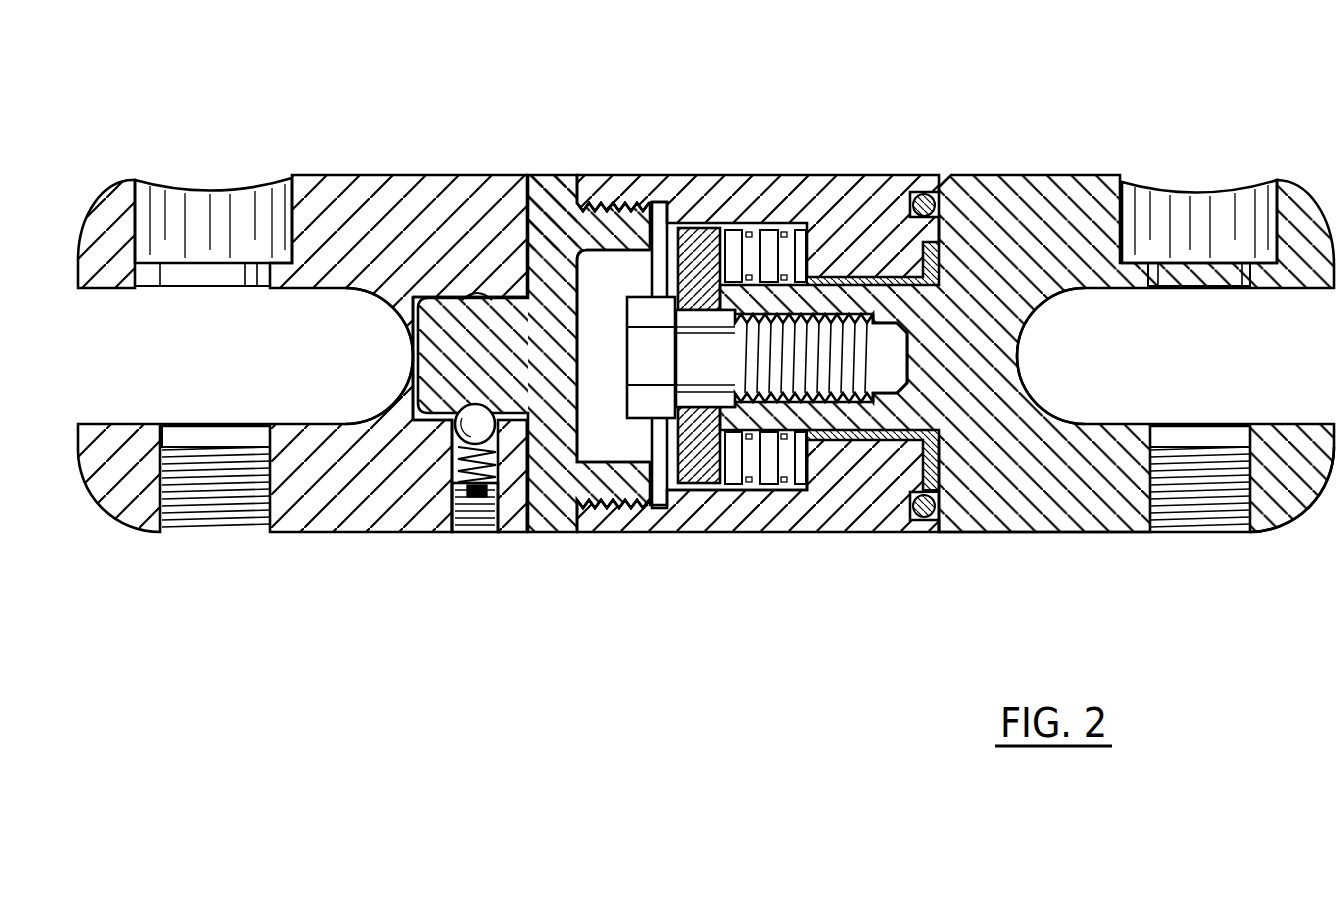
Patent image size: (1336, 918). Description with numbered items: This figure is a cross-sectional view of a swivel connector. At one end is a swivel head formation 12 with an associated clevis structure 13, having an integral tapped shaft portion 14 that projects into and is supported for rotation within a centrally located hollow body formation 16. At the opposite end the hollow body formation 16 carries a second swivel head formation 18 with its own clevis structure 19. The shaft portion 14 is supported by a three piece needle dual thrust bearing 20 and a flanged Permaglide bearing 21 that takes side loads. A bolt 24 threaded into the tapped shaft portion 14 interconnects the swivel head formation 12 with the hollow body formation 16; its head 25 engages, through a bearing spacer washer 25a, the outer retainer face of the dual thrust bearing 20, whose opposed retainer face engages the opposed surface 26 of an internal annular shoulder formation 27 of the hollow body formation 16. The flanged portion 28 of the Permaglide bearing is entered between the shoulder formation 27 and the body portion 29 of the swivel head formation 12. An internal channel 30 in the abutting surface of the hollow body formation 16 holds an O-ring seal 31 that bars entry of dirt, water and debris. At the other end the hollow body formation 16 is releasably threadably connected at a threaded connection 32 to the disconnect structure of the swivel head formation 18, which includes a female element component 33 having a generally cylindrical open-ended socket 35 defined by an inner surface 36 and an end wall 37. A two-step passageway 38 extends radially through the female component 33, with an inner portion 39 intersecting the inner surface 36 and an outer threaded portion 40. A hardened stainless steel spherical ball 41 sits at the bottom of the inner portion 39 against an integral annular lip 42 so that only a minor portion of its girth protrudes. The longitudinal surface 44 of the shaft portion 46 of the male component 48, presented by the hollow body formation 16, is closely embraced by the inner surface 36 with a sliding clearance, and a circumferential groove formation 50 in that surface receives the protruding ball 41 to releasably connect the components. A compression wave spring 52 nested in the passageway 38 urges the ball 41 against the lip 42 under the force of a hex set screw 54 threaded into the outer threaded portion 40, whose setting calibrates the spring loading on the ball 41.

The swivel head formation 12 is at (1082, 160).
The clevis structure 13 is at (1317, 515).
The tapped shaft portion 14 is at (840, 430).
The central hollow body formation 16 is at (838, 200).
The second swivel head formation 18 is at (330, 160).
The clevis structure 19 is at (96, 505).
The three piece needle dual thrust bearing 20 is at (768, 240).
The flanged Permaglide bearing 21 is at (873, 448).
The bolt 24 is at (850, 381).
The head 25 is at (643, 298).
The bearing spacer washer 25a is at (702, 240).
The opposed surface 26 is at (777, 492).
The internal annular shoulder formation 27 is at (815, 500).
The flanged portion 28 is at (940, 262).
The body portion 29 is at (1092, 505).
The internal channel 30 is at (942, 470).
The O-ring seal 31 is at (935, 512).
The threaded connection 32 is at (598, 205).
The female element component 33 is at (378, 196).
The socket 35 is at (418, 297).
The inner surface 36 is at (466, 292).
The end wall 37 is at (452, 345).
The passageway 38 is at (515, 527).
The inner portion 39 is at (512, 487).
The outer threaded portion 40 is at (423, 455).
The spherical ball 41 is at (480, 408).
The annular lip 42 is at (497, 455).
The longitudinal surface 44 is at (420, 470).
The shaft portion 46 is at (425, 352).
The male component 48 is at (548, 205).
The circumferential groove formation 50 is at (548, 290).
The spring 52 is at (472, 505).
The hex set screw 54 is at (464, 496).